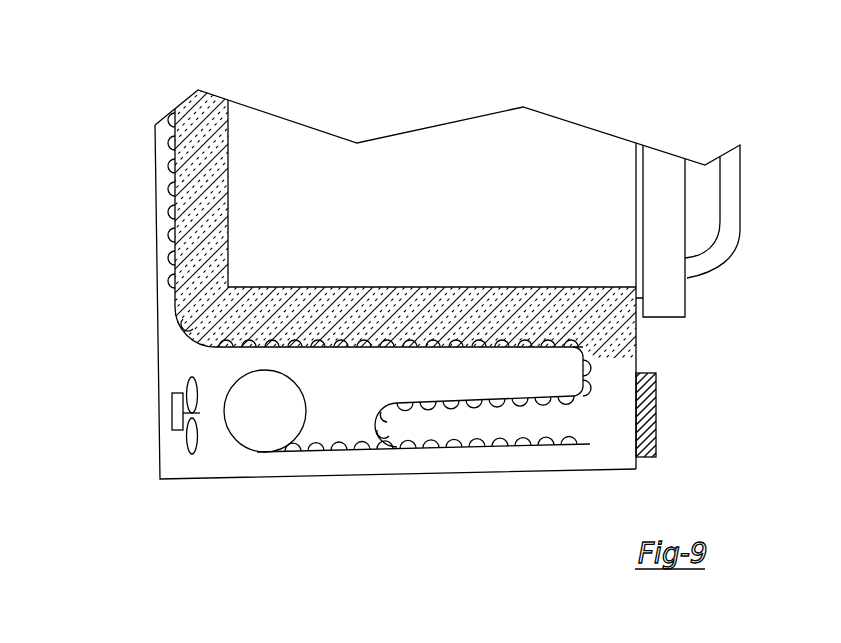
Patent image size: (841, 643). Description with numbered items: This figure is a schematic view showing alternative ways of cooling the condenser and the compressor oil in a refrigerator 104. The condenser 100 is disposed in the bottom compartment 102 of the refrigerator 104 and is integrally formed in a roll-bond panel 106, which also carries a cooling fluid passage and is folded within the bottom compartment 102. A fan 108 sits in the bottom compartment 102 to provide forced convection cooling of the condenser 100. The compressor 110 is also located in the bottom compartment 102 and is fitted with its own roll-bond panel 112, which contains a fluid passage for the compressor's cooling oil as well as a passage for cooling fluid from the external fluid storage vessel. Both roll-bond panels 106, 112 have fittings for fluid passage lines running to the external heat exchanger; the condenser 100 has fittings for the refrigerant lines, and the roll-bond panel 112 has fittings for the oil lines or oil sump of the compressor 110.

The condenser 100 is at (467, 393).
The bottom compartment 102 is at (400, 377).
The refrigerator 104 is at (153, 192).
The roll-bond panel 106 is at (553, 357).
The fan 108 is at (178, 410).
The compressor 110 is at (262, 423).
The roll-bond panel 112 is at (338, 447).